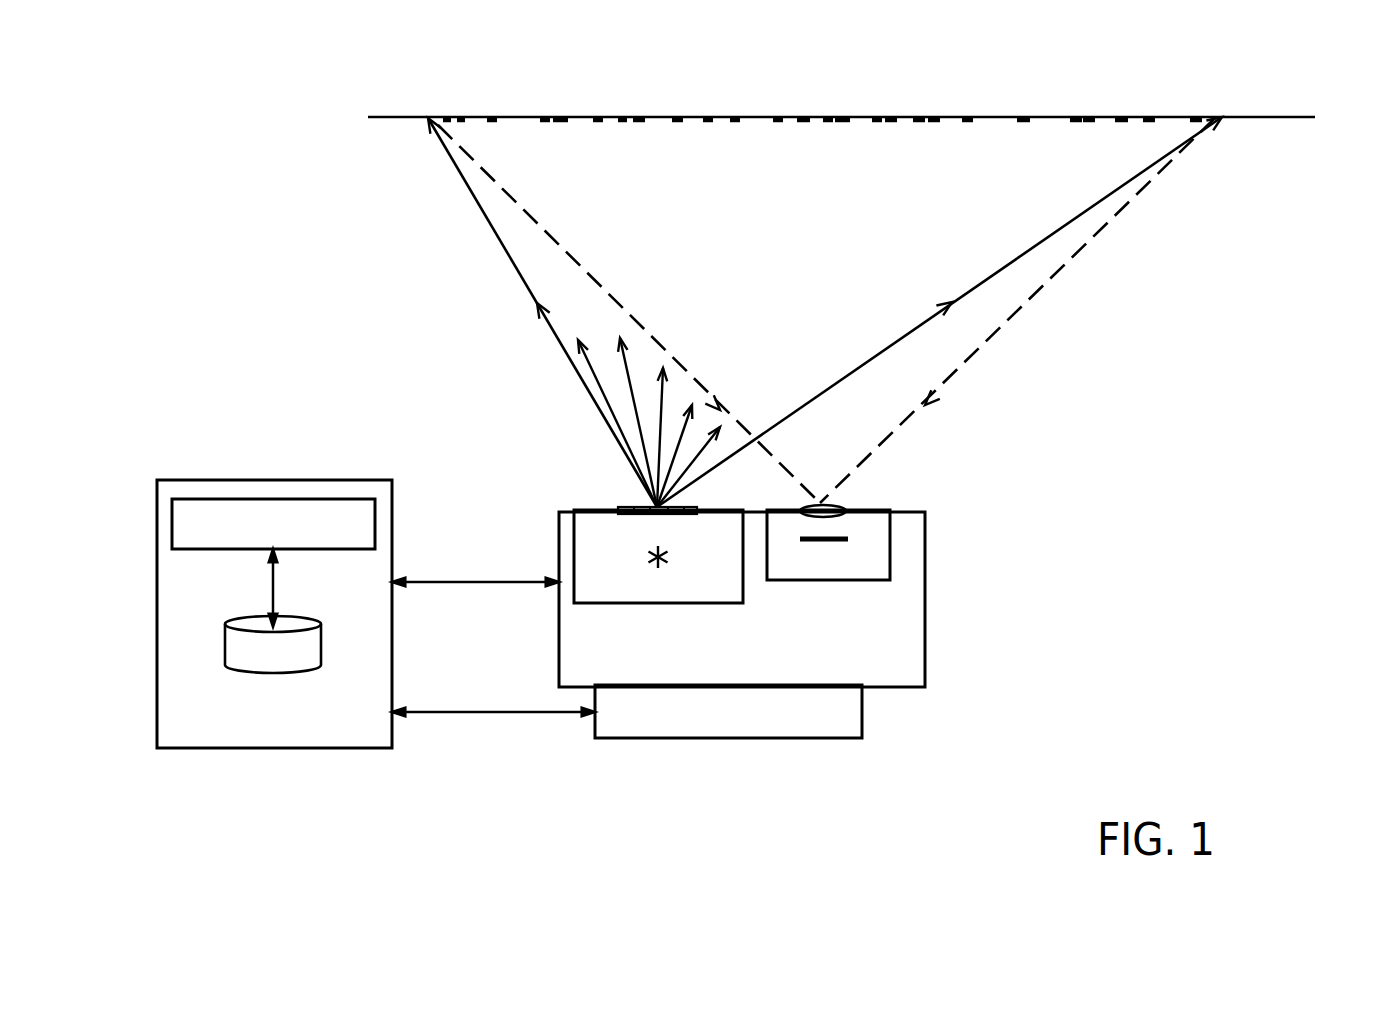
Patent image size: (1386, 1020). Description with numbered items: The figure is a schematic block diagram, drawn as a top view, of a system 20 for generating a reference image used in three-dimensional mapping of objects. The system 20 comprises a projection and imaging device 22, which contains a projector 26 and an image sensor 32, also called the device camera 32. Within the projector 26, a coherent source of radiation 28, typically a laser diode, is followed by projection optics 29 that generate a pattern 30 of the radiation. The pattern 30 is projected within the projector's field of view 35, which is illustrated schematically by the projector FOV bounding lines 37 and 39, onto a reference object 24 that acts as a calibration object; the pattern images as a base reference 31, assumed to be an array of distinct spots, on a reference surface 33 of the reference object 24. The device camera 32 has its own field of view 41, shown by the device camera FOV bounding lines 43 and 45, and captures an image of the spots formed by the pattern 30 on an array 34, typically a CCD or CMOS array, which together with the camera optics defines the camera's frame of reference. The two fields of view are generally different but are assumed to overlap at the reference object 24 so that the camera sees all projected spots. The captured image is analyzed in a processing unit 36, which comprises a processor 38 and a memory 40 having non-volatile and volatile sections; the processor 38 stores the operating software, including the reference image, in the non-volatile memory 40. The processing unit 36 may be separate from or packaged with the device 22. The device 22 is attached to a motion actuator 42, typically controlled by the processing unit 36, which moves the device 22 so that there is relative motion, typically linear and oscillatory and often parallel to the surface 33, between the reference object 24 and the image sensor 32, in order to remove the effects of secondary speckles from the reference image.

The system 20 is at (238, 233).
The projection and imaging device 22 is at (925, 583).
The reference object 24 is at (1293, 113).
The projector 26 is at (580, 527).
The coherent source of radiation 28 is at (648, 560).
The projection optics 29 is at (613, 500).
The pattern 30 is at (517, 332).
The base reference 31 is at (614, 93).
The image sensor 32 is at (890, 520).
The reference surface 33 is at (1255, 117).
The array 34 is at (847, 538).
The field of view 35 is at (726, 299).
The processing unit 36 is at (158, 652).
The projector FOV bounding line 37 is at (457, 160).
The processor 38 is at (175, 518).
The projector FOV bounding line 39 is at (1015, 253).
The memory 40 is at (323, 643).
The field of view 41 is at (835, 456).
The motion actuator 42 is at (862, 722).
The device camera FOV bounding line 43 is at (1050, 280).
The device camera FOV bounding line 45 is at (560, 252).